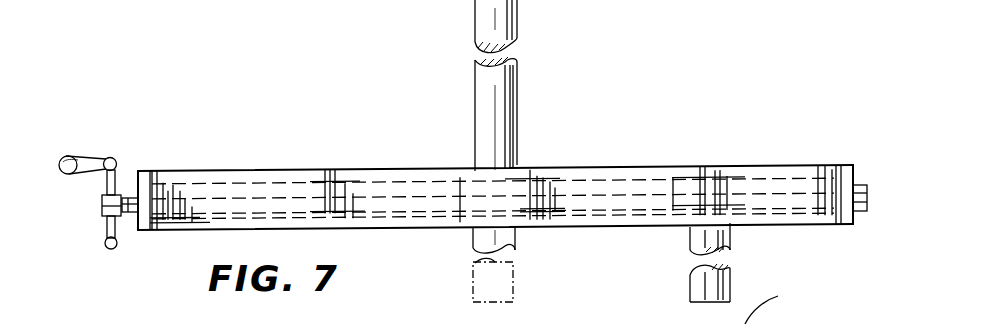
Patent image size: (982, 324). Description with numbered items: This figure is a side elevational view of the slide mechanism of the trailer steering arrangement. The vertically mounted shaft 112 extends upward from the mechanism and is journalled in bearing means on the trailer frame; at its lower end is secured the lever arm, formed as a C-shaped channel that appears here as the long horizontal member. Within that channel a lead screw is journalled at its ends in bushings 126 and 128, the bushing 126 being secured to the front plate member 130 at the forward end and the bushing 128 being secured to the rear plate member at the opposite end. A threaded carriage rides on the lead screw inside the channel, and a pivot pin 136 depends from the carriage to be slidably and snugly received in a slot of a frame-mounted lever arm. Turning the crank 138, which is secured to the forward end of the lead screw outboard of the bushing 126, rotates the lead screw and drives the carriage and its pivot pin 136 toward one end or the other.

The vertically mounted shaft 112 is at (478, 105).
The bushing 126 is at (135, 196).
The bushing 128 is at (863, 186).
The front plate member 130 is at (118, 323).
The pivot pin 136 is at (475, 263).
The crank 138 is at (101, 213).